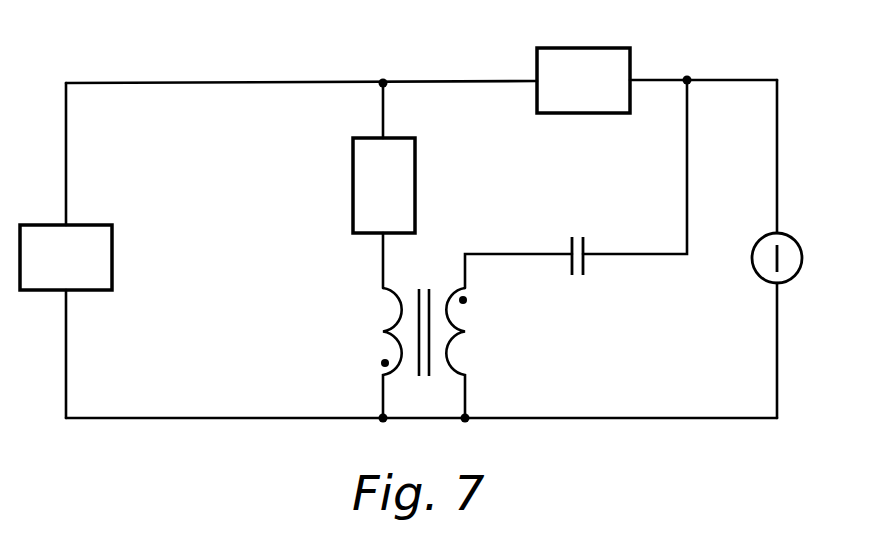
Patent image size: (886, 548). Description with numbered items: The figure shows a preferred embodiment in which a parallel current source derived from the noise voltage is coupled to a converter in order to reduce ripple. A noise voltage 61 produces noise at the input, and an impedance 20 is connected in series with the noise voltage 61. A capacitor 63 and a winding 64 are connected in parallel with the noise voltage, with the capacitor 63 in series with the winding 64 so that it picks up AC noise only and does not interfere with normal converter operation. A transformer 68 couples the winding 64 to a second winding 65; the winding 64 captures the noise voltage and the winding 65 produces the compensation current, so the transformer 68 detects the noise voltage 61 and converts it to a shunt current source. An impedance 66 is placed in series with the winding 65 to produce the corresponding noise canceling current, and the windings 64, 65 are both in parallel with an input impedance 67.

The impedance 20 is at (592, 48).
The noise voltage 61 is at (795, 276).
The capacitor 63 is at (597, 241).
The winding 64 is at (445, 357).
The winding 65 is at (398, 317).
The impedance 66 is at (353, 185).
The input impedance 67 is at (112, 248).
The transformer 68 is at (428, 288).